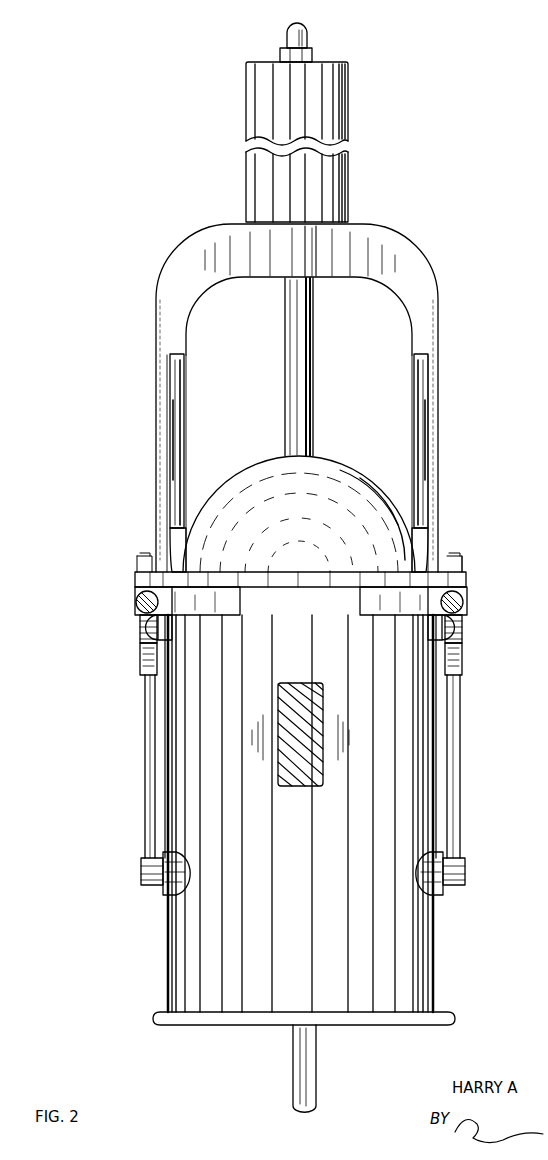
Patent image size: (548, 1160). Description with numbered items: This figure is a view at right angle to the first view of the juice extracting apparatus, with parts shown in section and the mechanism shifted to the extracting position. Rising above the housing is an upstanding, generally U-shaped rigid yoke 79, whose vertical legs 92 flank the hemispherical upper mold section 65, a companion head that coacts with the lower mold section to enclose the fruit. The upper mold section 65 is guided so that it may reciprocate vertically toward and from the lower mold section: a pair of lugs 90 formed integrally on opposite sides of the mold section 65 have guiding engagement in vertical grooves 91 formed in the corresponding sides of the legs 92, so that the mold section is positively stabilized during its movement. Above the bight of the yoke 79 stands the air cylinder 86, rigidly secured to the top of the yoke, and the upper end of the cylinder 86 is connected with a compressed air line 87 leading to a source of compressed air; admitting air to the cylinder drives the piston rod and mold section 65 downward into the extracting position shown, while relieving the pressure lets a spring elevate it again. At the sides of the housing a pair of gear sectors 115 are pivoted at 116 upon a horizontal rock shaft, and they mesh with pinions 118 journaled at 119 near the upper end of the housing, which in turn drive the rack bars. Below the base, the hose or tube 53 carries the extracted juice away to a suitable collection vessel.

The hose or tube 53 is at (316, 1065).
The upper mold section 65 is at (311, 539).
The yoke 79 is at (438, 326).
The air cylinder 86 is at (348, 91).
The compressed air line 87 is at (288, 42).
The lugs 90 is at (176, 541).
The vertical grooves 91 is at (174, 438).
The vertical legs 92 is at (186, 417).
The gear sectors 115 is at (145, 764).
The pivot 116 is at (141, 870).
The pinions 118 is at (140, 626).
The journal 119 is at (165, 636).